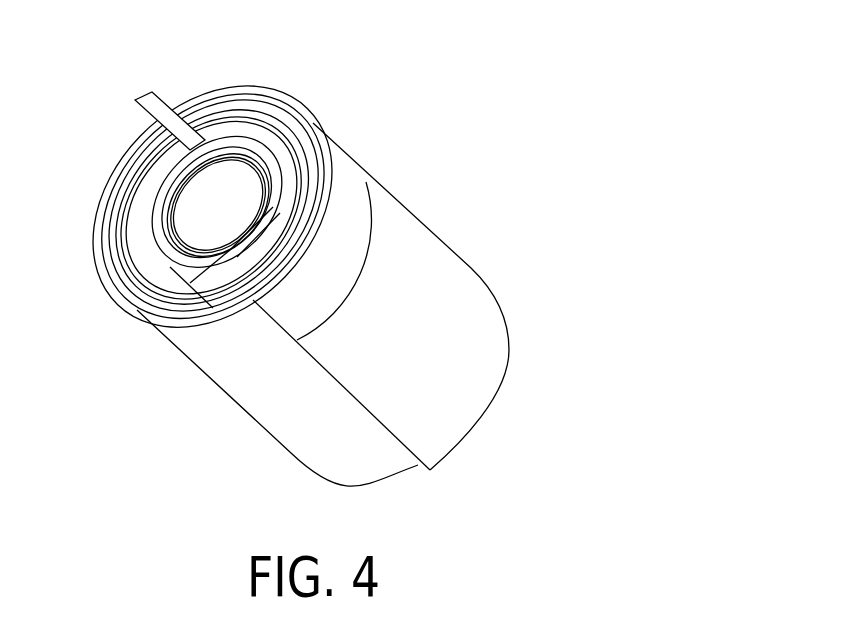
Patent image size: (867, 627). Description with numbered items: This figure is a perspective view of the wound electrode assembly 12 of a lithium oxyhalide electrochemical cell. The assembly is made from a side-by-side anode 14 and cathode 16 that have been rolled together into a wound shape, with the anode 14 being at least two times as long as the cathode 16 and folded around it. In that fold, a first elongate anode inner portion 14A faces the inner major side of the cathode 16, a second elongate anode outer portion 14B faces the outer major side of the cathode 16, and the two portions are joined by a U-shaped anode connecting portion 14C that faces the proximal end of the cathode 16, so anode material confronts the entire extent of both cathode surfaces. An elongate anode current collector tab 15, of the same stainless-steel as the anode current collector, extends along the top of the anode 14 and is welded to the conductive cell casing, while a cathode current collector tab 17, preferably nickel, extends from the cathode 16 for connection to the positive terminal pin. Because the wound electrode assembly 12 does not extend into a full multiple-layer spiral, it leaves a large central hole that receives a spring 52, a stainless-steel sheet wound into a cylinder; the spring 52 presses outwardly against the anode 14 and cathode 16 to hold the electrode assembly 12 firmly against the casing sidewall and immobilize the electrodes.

The electrode assembly 12 is at (291, 251).
The anode 14 is at (460, 287).
The anode inner portion 14A is at (183, 247).
The anode outer portion 14B is at (137, 310).
The anode connecting portion 14C is at (230, 282).
The anode current collector tab 15 is at (347, 177).
The cathode 16 is at (193, 278).
The cathode current collector tab 17 is at (147, 97).
The spring 52 is at (257, 222).